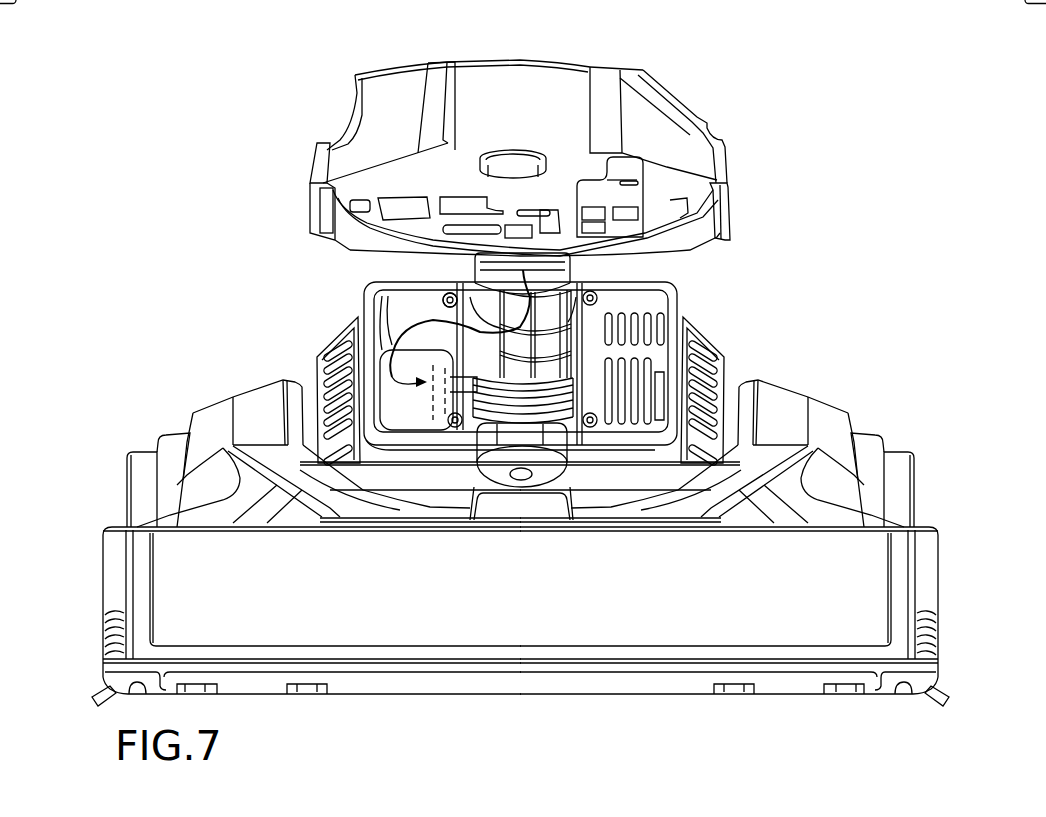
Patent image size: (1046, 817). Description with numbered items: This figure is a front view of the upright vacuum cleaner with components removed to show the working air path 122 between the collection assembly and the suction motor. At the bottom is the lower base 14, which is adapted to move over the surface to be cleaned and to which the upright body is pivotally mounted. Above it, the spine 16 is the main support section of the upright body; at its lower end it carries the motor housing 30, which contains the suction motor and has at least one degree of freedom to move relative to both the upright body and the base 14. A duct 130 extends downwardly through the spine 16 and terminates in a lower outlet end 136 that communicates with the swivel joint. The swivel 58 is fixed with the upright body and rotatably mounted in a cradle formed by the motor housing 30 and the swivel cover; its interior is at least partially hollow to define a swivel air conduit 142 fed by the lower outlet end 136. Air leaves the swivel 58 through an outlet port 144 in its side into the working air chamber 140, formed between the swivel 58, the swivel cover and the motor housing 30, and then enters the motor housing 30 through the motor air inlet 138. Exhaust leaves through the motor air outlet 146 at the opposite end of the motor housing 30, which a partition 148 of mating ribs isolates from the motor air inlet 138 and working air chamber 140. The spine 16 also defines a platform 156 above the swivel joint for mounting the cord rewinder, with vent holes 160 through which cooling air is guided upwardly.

The lower base 14 is at (108, 520).
The spine 16 is at (347, 120).
The motor housing 30 is at (337, 350).
The swivel 58 is at (577, 468).
The working air path 122 is at (390, 330).
The duct 130 is at (565, 77).
The lower outlet end 136 is at (730, 203).
The motor air inlet 138 is at (415, 425).
The working air chamber 140 is at (412, 305).
The swivel air conduit 142 is at (560, 367).
The outlet port 144 is at (455, 292).
The motor air outlet 146 is at (637, 340).
The partition 148 is at (583, 313).
The platform 156 is at (483, 184).
The vent holes 160 is at (553, 257).